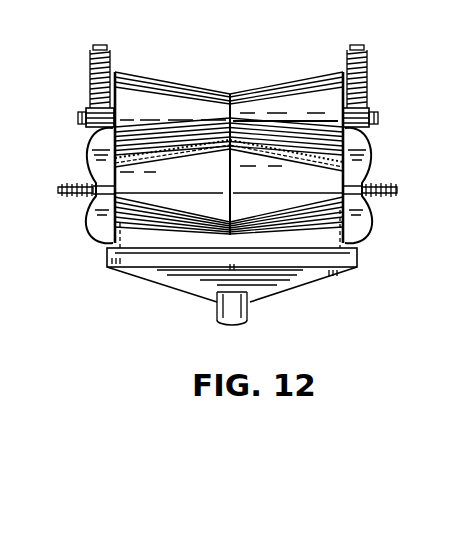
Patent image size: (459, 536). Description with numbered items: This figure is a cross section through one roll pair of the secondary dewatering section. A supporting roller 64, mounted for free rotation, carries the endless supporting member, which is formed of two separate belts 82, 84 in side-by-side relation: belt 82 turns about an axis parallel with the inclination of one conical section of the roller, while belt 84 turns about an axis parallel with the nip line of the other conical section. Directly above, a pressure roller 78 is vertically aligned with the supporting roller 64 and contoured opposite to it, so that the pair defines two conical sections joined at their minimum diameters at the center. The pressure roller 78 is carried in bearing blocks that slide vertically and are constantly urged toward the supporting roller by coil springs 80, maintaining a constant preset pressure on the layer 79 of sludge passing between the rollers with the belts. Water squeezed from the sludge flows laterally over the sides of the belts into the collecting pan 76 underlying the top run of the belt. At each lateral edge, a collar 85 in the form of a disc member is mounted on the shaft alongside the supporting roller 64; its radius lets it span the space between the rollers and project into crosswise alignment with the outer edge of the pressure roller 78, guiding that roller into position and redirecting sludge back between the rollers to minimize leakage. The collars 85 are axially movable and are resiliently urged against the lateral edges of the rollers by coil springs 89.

The supporting roller 64 is at (268, 224).
The collecting pan 76 is at (175, 250).
The pressure roller 78 is at (162, 104).
The layer of sludge 79 is at (135, 170).
The coil spring 80 is at (90, 53).
The belt 82 is at (188, 156).
The belt 84 is at (305, 165).
The collar 85 is at (87, 227).
The coil spring 89 is at (62, 185).